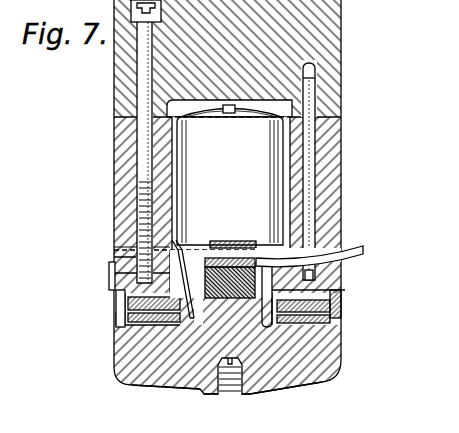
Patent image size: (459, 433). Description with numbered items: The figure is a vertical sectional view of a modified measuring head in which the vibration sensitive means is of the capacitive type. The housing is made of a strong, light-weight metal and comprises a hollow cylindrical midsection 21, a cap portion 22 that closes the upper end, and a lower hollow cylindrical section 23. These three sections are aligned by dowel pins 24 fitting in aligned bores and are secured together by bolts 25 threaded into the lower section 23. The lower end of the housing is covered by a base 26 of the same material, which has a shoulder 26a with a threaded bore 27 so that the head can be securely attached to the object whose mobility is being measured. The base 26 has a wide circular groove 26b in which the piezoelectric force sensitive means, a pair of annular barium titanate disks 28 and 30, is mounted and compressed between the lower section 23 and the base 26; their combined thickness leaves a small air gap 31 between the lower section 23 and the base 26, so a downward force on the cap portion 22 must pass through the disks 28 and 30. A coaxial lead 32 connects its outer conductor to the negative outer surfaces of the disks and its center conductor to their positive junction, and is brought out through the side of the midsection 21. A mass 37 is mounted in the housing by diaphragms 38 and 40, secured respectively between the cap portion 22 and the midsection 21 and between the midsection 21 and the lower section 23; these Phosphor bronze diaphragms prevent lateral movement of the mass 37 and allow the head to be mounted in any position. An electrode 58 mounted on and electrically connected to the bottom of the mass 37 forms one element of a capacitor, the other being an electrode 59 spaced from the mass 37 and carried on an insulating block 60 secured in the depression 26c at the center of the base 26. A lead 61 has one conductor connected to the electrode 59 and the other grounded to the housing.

The hollow cylindrical midsection 21 is at (341, 178).
The cap portion 22 is at (341, 35).
The lower hollow cylindrical section 23 is at (341, 273).
The dowel pins 24 is at (316, 127).
The bolts 25 is at (139, 98).
The base 26 is at (341, 351).
The shoulder 26a is at (249, 395).
The wide circular groove 26b is at (272, 320).
The depression 26c is at (226, 292).
The threaded bore 27 is at (236, 388).
The annular disk 28 is at (116, 308).
The annular disk 30 is at (120, 323).
The air gap 31 is at (345, 290).
The coaxial electrical lead 32 is at (114, 270).
The mass 37 is at (200, 159).
The diaphragm 38 is at (267, 113).
The diaphragm 40 is at (115, 243).
The electrode 58 is at (215, 245).
The electrode 59 is at (236, 258).
The insulating block 60 is at (200, 280).
The lead 61 is at (356, 248).